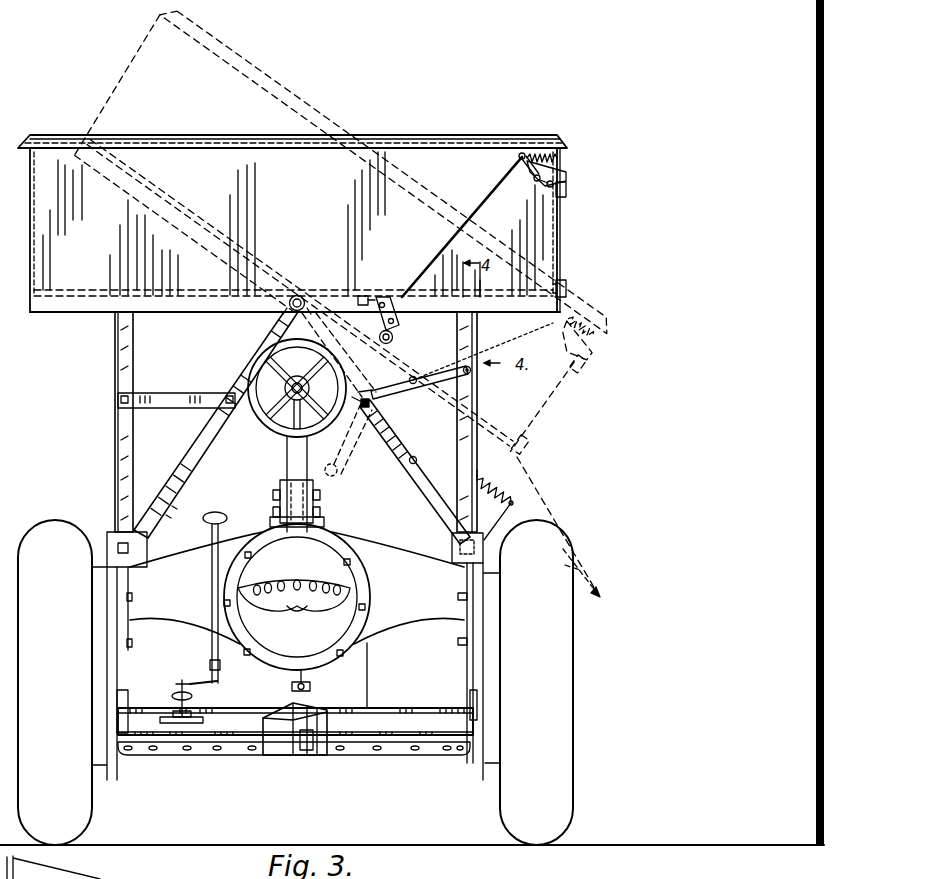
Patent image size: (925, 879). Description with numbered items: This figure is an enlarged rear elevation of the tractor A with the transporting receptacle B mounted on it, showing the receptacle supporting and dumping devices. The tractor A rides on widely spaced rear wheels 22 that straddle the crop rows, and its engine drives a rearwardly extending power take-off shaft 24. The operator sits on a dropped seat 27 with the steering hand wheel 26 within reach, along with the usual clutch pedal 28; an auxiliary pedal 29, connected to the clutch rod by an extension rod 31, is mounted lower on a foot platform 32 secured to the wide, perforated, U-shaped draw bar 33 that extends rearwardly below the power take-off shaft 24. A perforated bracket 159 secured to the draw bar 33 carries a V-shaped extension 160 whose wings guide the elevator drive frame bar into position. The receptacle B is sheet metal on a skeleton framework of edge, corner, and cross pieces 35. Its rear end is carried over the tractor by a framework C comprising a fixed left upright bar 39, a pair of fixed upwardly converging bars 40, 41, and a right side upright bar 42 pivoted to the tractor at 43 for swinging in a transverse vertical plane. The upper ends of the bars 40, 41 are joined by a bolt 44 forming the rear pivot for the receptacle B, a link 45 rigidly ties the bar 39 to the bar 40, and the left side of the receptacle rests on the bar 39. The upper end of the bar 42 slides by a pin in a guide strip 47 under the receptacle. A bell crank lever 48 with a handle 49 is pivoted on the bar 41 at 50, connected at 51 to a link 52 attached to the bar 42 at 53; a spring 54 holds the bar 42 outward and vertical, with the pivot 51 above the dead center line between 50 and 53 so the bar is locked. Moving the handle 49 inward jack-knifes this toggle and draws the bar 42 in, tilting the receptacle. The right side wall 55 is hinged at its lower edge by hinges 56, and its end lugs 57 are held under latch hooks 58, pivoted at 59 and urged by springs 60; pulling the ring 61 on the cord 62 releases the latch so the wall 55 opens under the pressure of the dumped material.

The rear wheels 22 is at (77, 818).
The power take-off shaft 24 is at (311, 687).
The hand wheel 26 is at (258, 367).
The seat 27 is at (350, 592).
The clutch pedal 28 is at (219, 515).
The auxiliary pedal 29 is at (174, 694).
The extension rod 31 is at (190, 680).
The foot platform 32 is at (133, 724).
The draw bar 33 is at (128, 746).
The edge, corner, and cross pieces 35 is at (60, 290).
The left upright bar 39 is at (122, 457).
The upwardly converging bar 40 is at (184, 460).
The upwardly converging bar 41 is at (440, 513).
The right side upright bar 42 is at (474, 413).
The pivot 43 is at (470, 548).
The bolt 44 is at (299, 297).
The link 45 is at (168, 401).
The guide strip 47 is at (364, 297).
The bell crank lever 48 is at (348, 440).
The handle 49 is at (410, 461).
The pivot 50 is at (356, 398).
The pivot 51 is at (412, 378).
The link 52 is at (437, 376).
The pivot 53 is at (470, 372).
The spring 54 is at (498, 497).
The right side wall 55 is at (561, 236).
The hinges 56 is at (568, 297).
The lugs 57 is at (567, 193).
The latch hooks 58 is at (567, 174).
The pivot 59 is at (533, 181).
The springs 60 is at (560, 156).
The ring 61 is at (381, 333).
The cord 62 is at (436, 262).
The perforated bracket 159 is at (303, 755).
The V-shaped extension 160 is at (327, 711).
The tractor A is at (222, 493).
The receptacle B is at (457, 138).
The framework C is at (116, 432).